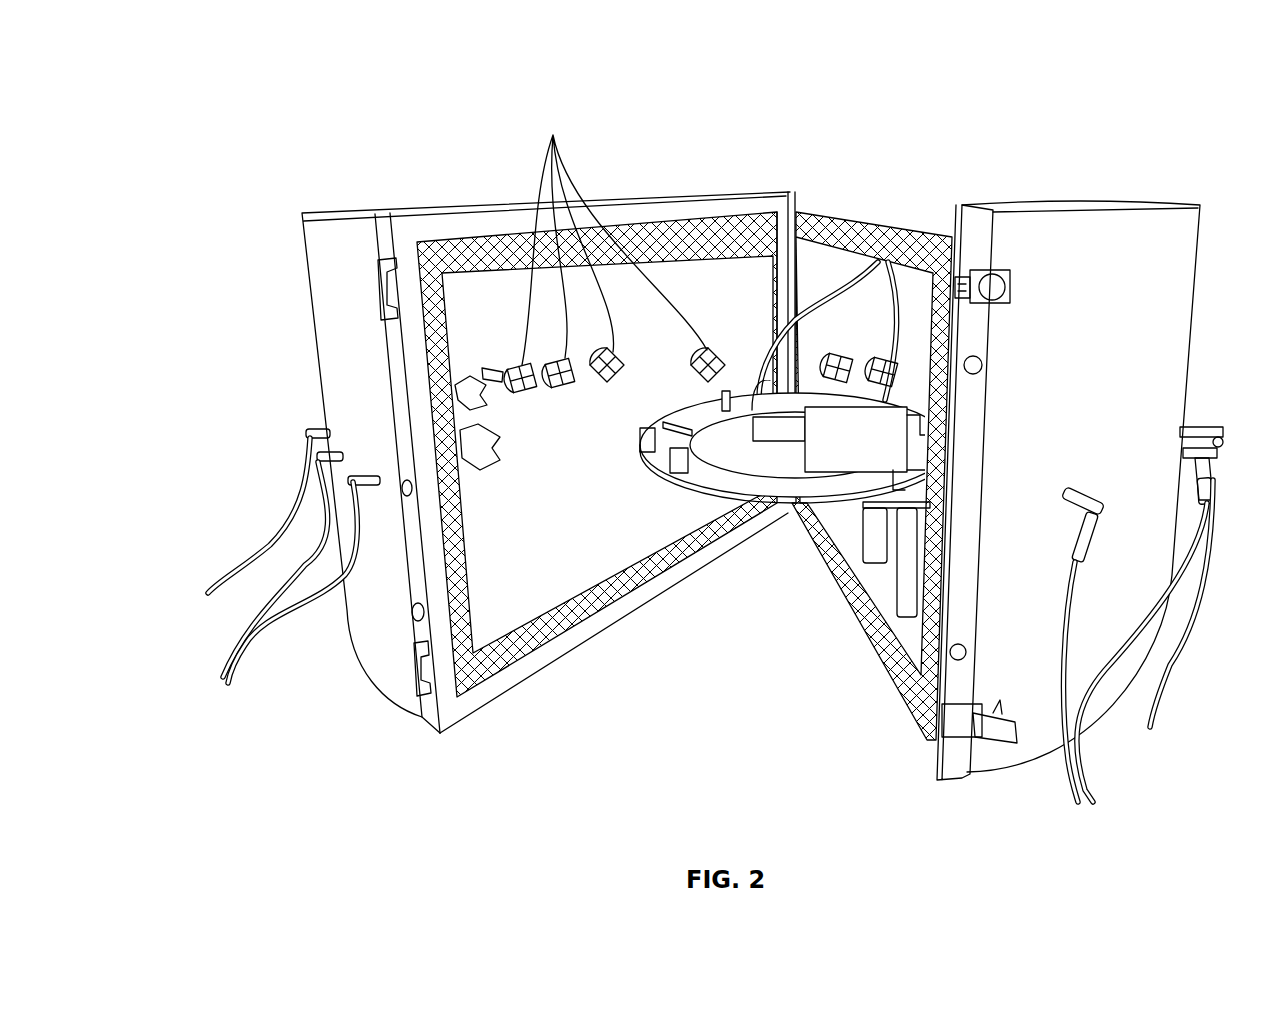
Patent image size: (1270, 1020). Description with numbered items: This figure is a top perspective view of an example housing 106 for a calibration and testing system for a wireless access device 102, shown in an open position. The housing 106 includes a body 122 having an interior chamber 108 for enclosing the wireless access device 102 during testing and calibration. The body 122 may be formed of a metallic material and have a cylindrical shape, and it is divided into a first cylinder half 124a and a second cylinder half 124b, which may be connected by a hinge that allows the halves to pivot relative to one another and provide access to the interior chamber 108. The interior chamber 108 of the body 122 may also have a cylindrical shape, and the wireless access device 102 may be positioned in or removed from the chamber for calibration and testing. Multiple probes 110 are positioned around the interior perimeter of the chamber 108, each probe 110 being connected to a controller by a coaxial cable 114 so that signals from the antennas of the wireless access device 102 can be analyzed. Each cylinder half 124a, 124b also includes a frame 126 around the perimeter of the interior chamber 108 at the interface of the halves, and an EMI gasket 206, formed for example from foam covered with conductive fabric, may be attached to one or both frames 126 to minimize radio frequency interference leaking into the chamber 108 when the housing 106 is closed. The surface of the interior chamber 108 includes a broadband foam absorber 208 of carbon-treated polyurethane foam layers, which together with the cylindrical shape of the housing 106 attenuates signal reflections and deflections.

The wireless access device 102 is at (775, 465).
The housing 106 is at (338, 716).
The interior chamber 108 is at (718, 287).
The probes 110 is at (680, 291).
The coaxial cable 114 is at (253, 556).
The body 122 is at (793, 210).
The first cylinder half 124a is at (345, 312).
The second cylinder half 124b is at (1022, 673).
The frame 126 is at (893, 218).
The EMI gasket 206 is at (500, 660).
The broadband foam absorber 208 is at (541, 542).